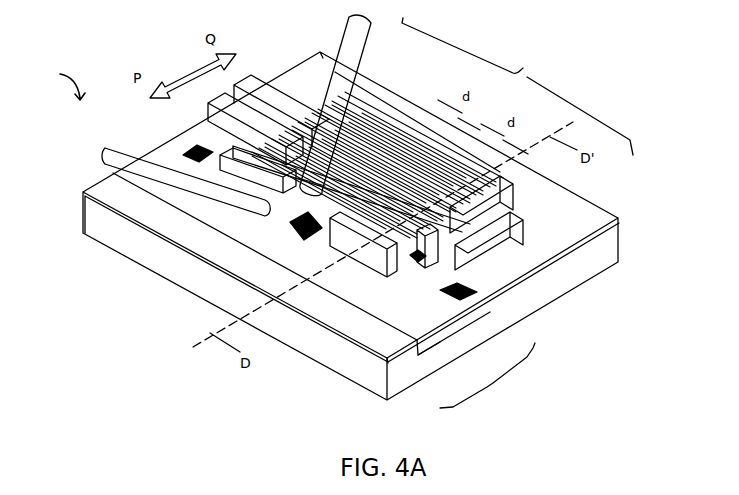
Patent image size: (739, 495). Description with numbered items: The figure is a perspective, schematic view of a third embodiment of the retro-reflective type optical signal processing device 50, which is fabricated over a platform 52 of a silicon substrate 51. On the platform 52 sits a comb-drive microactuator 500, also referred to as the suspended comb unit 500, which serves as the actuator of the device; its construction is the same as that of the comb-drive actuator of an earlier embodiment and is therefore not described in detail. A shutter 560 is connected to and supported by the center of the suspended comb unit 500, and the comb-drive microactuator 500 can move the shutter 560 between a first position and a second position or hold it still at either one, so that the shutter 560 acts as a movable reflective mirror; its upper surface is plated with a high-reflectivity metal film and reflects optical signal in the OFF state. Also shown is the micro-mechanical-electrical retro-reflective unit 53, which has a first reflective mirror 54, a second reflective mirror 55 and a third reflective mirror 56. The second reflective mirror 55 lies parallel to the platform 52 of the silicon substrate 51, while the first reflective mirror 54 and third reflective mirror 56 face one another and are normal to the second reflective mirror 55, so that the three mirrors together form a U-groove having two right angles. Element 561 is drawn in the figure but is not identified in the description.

The retro-reflective type optical signal processing device 50 is at (60, 80).
The comb-drive microactuator 500 is at (517, 86).
The silicon substrate 51 is at (613, 238).
The platform 52 is at (587, 212).
The micro-mechanical-electrical retro-reflective unit 53 is at (487, 379).
The first reflective mirror 54 is at (418, 352).
The second reflective mirror 55 is at (433, 340).
The third reflective mirror 56 is at (450, 318).
The shutter 560 is at (222, 296).
The probe 561 is at (250, 247).